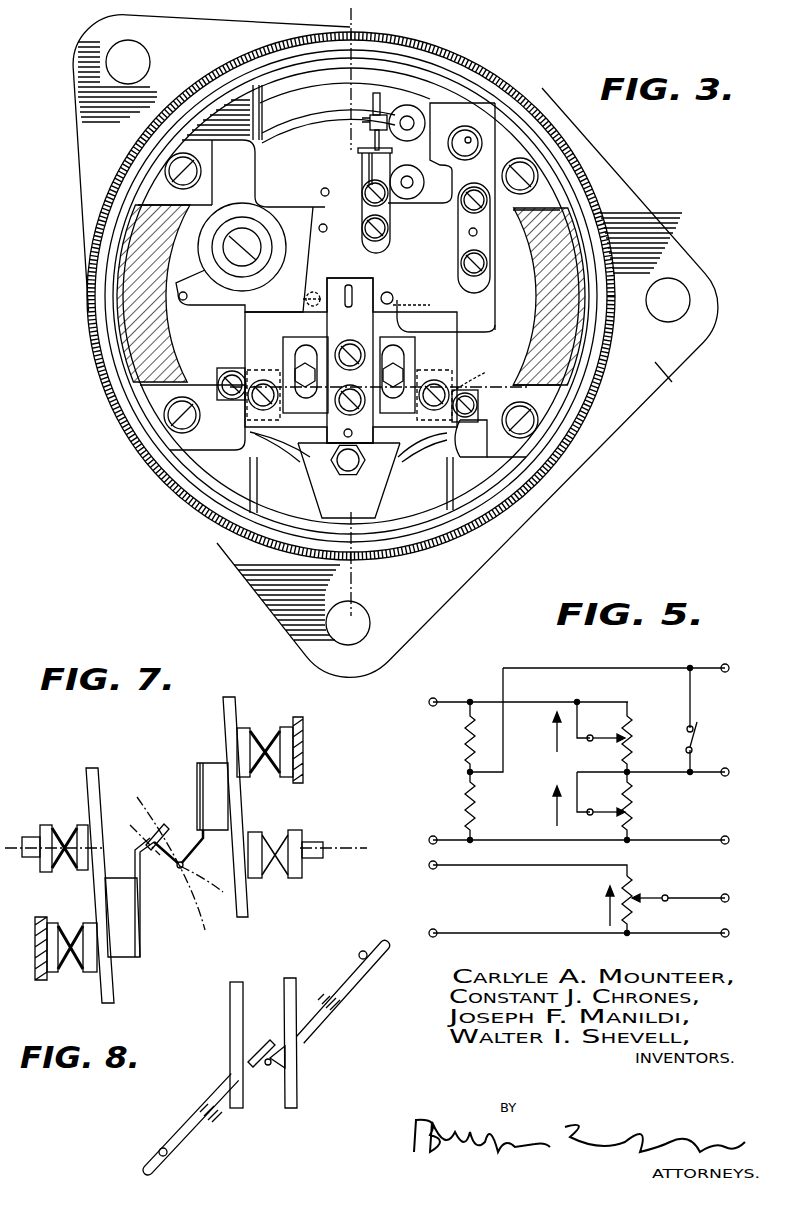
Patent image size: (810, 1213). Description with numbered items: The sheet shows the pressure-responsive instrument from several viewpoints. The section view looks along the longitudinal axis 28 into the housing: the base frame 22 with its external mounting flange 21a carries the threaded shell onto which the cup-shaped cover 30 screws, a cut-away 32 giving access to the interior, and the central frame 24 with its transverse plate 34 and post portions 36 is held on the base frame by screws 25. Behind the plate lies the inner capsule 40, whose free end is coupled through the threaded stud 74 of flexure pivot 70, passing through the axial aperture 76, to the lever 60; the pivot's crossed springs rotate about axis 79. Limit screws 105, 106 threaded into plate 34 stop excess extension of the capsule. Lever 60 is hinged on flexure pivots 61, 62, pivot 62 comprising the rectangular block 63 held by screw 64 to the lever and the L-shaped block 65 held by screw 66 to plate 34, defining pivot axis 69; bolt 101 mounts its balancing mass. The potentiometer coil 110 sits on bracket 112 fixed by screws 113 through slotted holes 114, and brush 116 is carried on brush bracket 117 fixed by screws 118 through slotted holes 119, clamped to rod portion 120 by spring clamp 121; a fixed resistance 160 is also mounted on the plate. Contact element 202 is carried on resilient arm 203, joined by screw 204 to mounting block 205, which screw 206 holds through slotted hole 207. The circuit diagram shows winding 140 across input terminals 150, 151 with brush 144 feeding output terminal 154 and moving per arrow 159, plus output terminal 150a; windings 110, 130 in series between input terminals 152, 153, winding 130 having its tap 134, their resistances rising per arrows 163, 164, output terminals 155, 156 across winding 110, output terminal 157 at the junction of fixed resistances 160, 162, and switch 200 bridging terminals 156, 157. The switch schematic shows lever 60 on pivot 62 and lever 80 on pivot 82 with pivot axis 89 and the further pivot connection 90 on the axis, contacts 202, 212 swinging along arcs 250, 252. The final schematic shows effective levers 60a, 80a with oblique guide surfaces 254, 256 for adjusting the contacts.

In FIG. 3, the external mounting flange 21a is at (660, 368).
In FIG. 3, the base frame 22 is at (190, 522).
In FIG. 3, the central frame 24 is at (140, 398).
In FIG. 3, the screws 25 is at (540, 170).
In FIG. 3, the cylindrical cover 30 is at (227, 537).
In FIG. 3, the cut-away 32 is at (263, 505).
In FIG. 3, the transverse web or plate 34 is at (290, 210).
In FIG. 3, the post portions 36 is at (130, 280).
In FIG. 3, the inner capsule 40 is at (310, 130).
In FIG. 3, the lever 60 is at (245, 333).
In FIG. 7, the lever 60 is at (98, 772).
In FIG. 3, the flexure pivot 61 is at (240, 406).
In FIG. 3, the flexure pivot 62 is at (472, 440).
In FIG. 7, the flexure pivot 62 is at (75, 918).
In FIG. 3, the rectangular block 63 is at (462, 360).
In FIG. 3, the screw 64 is at (440, 386).
In FIG. 3, the L-shaped block 65 is at (470, 396).
In FIG. 3, the screw 66 is at (470, 395).
In FIG. 3, the pivot axis 69 is at (207, 385).
In FIG. 7, the pivot axis 69 is at (70, 962).
In FIG. 8, the pivot axis 69 is at (160, 1148).
In FIG. 3, the axial aperture 76 is at (350, 578).
In FIG. 3, the axis 79 is at (393, 298).
In FIG. 3, the bolt 101 is at (350, 468).
In FIG. 3, the limit screw 105 is at (304, 309).
In FIG. 3, the limit screw 106 is at (424, 306).
In FIG. 3, the potentiometer coil 110 is at (420, 120).
In FIG. 5, the potentiometer coil 110 is at (636, 808).
In FIG. 3, the bracket 112 is at (478, 133).
In FIG. 3, the screws 113 is at (470, 195).
In FIG. 3, the slotted holes 114 is at (469, 222).
In FIG. 3, the potentiometer brush 116 is at (410, 110).
In FIG. 5, the potentiometer brush 116 is at (594, 816).
In FIG. 3, the brush bracket 117 is at (362, 165).
In FIG. 3, the screws 118 is at (362, 197).
In FIG. 3, the slotted holes 119 is at (362, 232).
In FIG. 3, the rod portion 120 is at (388, 87).
In FIG. 3, the spring clamp 121 is at (368, 116).
In FIG. 3, the fixed resistance 160 is at (242, 218).
In FIG. 5, the fixed resistance 160 is at (468, 802).
In FIG. 3, the contact element 202 is at (352, 290).
In FIG. 7, the contact element 202 is at (170, 822).
In FIG. 8, the contact element 202 is at (240, 1062).
In FIG. 3, the resilient arm 203 is at (373, 318).
In FIG. 3, the screw 204 is at (360, 350).
In FIG. 3, the mounting block 205 is at (412, 340).
In FIG. 3, the screw 206 is at (400, 380).
In FIG. 3, the slotted hole 207 is at (372, 413).
In FIG. 5, the potentiometer winding 130 is at (634, 734).
In FIG. 5, the wiper 134 is at (592, 742).
In FIG. 5, the potentiometer winding 140 is at (636, 890).
In FIG. 5, the brush 144 is at (664, 902).
In FIG. 5, the input terminal 150 is at (432, 929).
In FIG. 5, the second output terminal 150a is at (729, 930).
In FIG. 5, the input terminal 151 is at (429, 866).
In FIG. 5, the input terminal 152 is at (430, 838).
In FIG. 5, the input terminal 153 is at (431, 707).
In FIG. 5, the output terminal 154 is at (729, 896).
In FIG. 5, the output terminal 155 is at (729, 838).
In FIG. 5, the output terminal 156 is at (729, 770).
In FIG. 5, the third output terminal 157 is at (729, 666).
In FIG. 5, the arrow 159 is at (608, 914).
In FIG. 5, the fixed resistance 162 is at (468, 756).
In FIG. 5, the arrow 163 is at (555, 812).
In FIG. 5, the arrow 164 is at (555, 740).
In FIG. 5, the switch 200 is at (712, 738).
In FIG. 7, the longitudinal axis 28 is at (336, 848).
In FIG. 7, the flexure pivot 70 is at (64, 822).
In FIG. 7, the threaded stud 74 is at (30, 835).
In FIG. 7, the lever 80 is at (223, 712).
In FIG. 7, the flexure pivot 82 is at (268, 775).
In FIG. 7, the pivot axis 89 is at (268, 732).
In FIG. 8, the pivot axis 89 is at (361, 952).
In FIG. 7, the bearing 90 is at (276, 838).
In FIG. 7, the contact element 212 is at (178, 868).
In FIG. 8, the contact element 212 is at (266, 1066).
In FIG. 7, the circular arc 250 is at (200, 905).
In FIG. 7, the arc 252 is at (226, 898).
In FIG. 8, the effective lever 60a is at (210, 1100).
In FIG. 8, the effective lever 80a is at (340, 1000).
In FIG. 8, the oblique guide surface 254 is at (243, 1007).
In FIG. 8, the oblique guide surface 256 is at (284, 985).